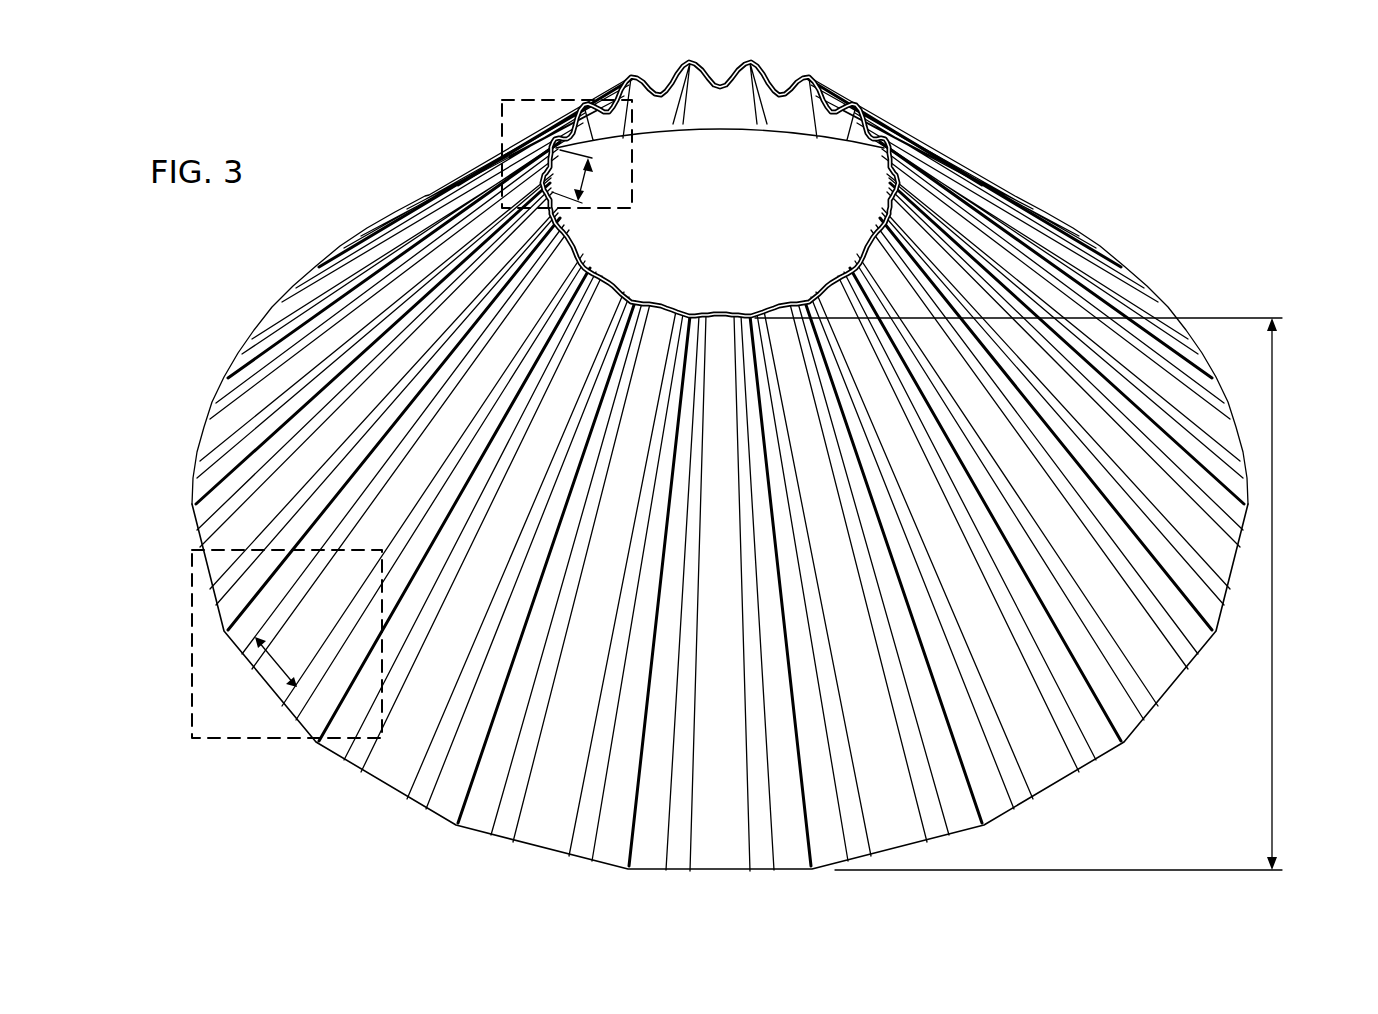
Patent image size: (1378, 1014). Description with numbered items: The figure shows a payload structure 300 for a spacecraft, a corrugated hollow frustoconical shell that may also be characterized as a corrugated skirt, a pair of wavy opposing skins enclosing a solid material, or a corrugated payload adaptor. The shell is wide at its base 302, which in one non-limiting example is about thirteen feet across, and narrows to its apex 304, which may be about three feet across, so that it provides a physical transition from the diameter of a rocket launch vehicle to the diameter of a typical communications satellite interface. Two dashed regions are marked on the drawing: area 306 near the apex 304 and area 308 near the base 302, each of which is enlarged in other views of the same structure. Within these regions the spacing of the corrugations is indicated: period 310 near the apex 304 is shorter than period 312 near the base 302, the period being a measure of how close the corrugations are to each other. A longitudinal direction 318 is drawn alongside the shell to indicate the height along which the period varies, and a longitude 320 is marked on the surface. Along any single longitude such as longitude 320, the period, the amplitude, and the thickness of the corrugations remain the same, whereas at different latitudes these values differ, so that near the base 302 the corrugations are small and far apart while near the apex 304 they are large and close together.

The payload structure 300 is at (1039, 125).
The base 302 is at (400, 789).
The apex 304 is at (868, 111).
The area 306 is at (500, 130).
The area 308 is at (192, 654).
The period 310 is at (593, 178).
The period 312 is at (276, 664).
The longitudinal direction 318 is at (1274, 600).
The longitude 320 is at (397, 210).